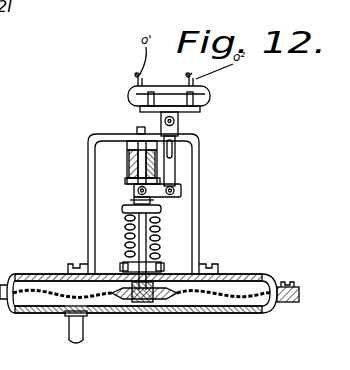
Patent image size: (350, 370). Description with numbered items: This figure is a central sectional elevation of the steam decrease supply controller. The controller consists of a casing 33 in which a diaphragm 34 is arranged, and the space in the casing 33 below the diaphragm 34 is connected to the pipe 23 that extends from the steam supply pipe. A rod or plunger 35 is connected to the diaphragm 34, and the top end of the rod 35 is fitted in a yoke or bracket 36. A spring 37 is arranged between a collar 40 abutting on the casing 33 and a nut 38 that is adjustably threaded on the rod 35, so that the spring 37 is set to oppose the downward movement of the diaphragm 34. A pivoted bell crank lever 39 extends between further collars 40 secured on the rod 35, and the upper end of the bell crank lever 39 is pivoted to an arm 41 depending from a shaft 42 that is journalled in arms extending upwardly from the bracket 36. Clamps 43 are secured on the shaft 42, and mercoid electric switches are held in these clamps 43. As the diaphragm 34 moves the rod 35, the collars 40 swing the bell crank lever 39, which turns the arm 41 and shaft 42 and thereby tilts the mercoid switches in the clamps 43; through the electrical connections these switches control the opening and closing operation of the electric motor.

The pipe 23 is at (71, 336).
The casing 33 is at (256, 277).
The diaphragm 34 is at (40, 296).
The rod or plunger 35 is at (128, 229).
The yoke or bracket 36 is at (195, 141).
The spring 37 is at (150, 218).
The nut 38 is at (128, 203).
The pivoted bell crank lever 39 is at (176, 168).
The collar 40 is at (211, 233).
The arm 41 is at (182, 113).
The shaft 42 is at (164, 120).
The clamps 43 is at (127, 94).